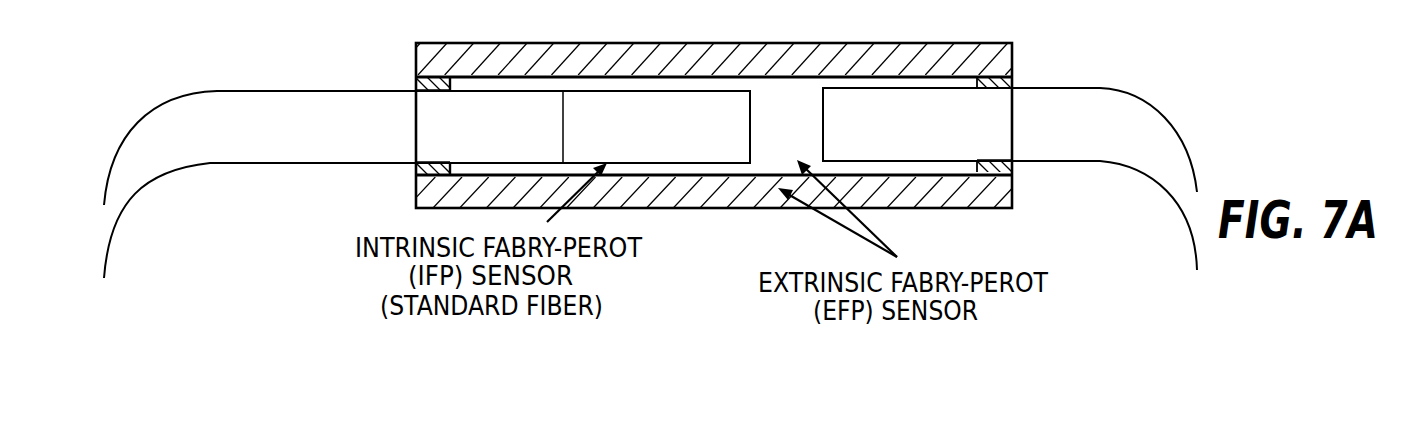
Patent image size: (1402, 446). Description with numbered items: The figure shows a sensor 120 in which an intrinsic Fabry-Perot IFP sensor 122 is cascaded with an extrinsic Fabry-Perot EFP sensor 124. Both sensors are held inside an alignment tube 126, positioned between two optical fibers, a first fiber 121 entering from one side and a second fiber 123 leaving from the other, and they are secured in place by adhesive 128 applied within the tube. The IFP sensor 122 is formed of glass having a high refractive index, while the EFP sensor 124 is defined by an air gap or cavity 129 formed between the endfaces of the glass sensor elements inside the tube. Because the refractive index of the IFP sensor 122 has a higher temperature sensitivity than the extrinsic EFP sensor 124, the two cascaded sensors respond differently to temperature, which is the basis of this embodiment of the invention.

The sensor 120 is at (1110, 56).
The fiber 121 is at (221, 90).
The IFP sensor 122 is at (708, 88).
The fiber 123 is at (1137, 96).
The EFP sensor 124 is at (883, 90).
The alignment tube 126 is at (604, 43).
The adhesive 128 is at (428, 90).
The air gap or cavity 129 is at (790, 100).